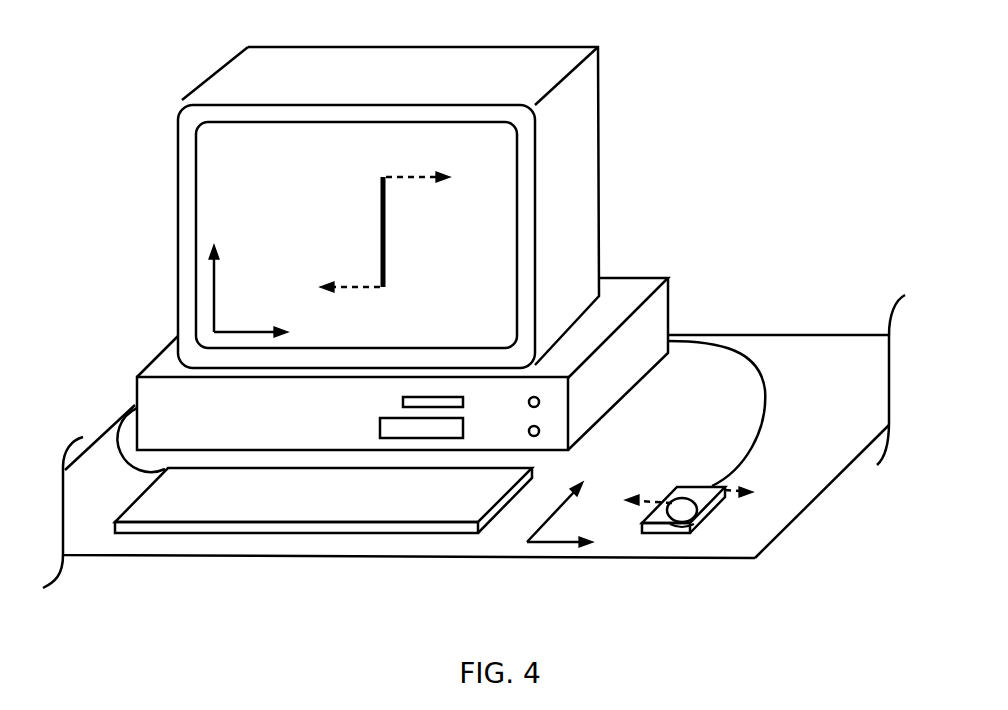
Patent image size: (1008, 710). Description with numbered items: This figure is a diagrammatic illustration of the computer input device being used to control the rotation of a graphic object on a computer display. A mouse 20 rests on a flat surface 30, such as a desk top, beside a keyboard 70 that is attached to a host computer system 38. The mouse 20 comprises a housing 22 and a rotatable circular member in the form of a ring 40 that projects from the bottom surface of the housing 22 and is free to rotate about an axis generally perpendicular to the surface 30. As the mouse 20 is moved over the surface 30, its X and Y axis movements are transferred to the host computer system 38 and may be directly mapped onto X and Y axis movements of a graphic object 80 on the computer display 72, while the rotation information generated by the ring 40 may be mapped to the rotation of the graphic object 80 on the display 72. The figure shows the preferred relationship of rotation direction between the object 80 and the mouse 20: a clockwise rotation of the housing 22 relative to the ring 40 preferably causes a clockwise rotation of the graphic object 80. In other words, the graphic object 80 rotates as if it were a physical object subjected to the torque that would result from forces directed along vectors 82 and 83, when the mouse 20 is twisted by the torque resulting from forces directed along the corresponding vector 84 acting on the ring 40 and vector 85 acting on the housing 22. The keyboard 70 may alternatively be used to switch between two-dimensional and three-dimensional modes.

The host computer system 38 is at (793, 172).
The computer display 72 is at (492, 143).
The vector 83 is at (413, 180).
The graphic object 80 is at (383, 230).
The vector 82 is at (360, 290).
The keyboard 70 is at (288, 503).
The surface 30 is at (410, 557).
The vector 84 is at (636, 512).
The ring 40 is at (677, 523).
The housing 22 is at (710, 508).
The vector 85 is at (733, 495).
The mouse 20 is at (763, 527).